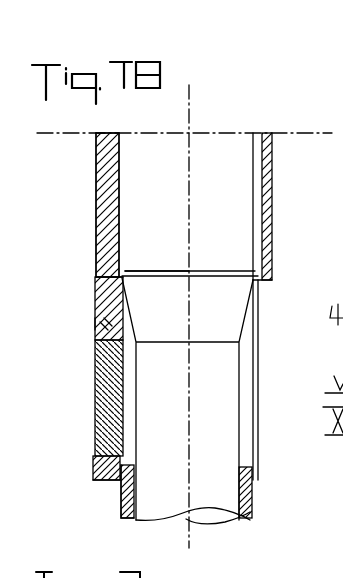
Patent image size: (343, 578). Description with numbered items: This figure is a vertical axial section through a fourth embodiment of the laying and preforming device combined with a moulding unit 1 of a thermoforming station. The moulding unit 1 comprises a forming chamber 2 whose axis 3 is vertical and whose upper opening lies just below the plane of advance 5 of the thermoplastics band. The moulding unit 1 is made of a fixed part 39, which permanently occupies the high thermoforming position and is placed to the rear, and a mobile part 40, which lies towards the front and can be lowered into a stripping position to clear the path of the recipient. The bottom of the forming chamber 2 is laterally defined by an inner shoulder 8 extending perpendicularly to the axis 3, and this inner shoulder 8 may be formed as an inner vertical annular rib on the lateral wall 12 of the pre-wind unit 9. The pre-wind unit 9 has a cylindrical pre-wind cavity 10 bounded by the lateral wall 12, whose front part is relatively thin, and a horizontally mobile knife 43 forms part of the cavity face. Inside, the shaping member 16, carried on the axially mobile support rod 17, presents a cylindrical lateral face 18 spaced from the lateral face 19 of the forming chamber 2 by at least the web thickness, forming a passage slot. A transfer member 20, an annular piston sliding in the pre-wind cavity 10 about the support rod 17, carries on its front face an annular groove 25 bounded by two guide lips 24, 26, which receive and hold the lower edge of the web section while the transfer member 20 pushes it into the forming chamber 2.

The moulding unit 1 is at (95, 200).
The forming chamber 2 is at (173, 187).
The axis 3 is at (191, 108).
The plane of advance 5 is at (316, 125).
The inner shoulder 8 is at (112, 265).
The pre-wind unit 9 is at (93, 322).
The pre-wind cavity 10 is at (248, 374).
The lateral wall 12 is at (113, 297).
The shaping member 16 is at (204, 272).
The support rod 17 is at (165, 518).
The cylindrical lateral face 18 is at (151, 271).
The lateral face 19 is at (125, 152).
The transfer member 20 is at (252, 513).
The guide lip 24 is at (95, 461).
The annular groove 25 is at (128, 470).
The guide lip 26 is at (130, 475).
The fixed part 39 is at (97, 166).
The mobile part 40 is at (268, 184).
The mobile knife 43 is at (99, 480).